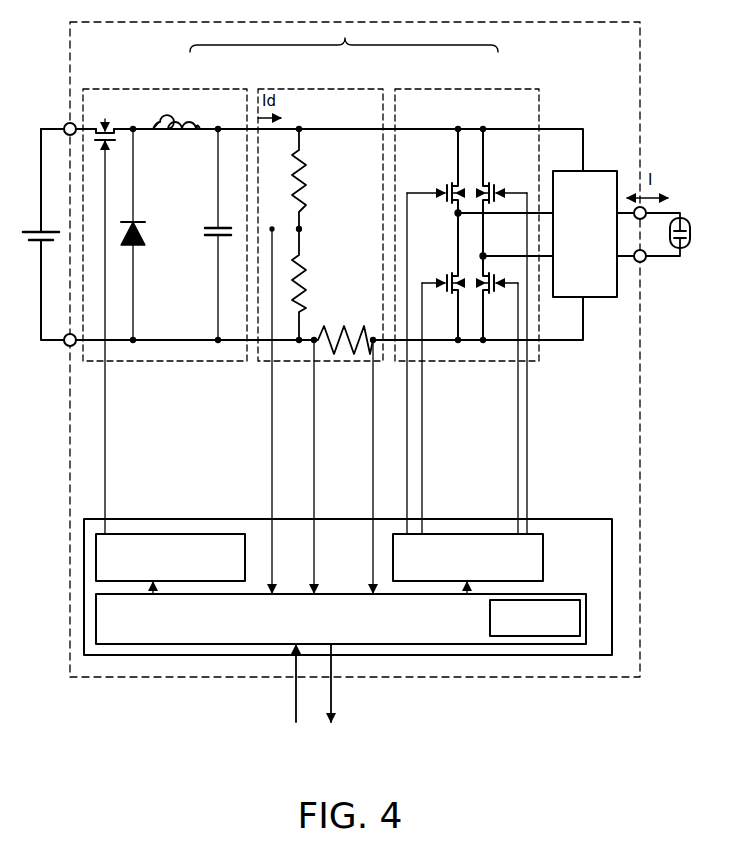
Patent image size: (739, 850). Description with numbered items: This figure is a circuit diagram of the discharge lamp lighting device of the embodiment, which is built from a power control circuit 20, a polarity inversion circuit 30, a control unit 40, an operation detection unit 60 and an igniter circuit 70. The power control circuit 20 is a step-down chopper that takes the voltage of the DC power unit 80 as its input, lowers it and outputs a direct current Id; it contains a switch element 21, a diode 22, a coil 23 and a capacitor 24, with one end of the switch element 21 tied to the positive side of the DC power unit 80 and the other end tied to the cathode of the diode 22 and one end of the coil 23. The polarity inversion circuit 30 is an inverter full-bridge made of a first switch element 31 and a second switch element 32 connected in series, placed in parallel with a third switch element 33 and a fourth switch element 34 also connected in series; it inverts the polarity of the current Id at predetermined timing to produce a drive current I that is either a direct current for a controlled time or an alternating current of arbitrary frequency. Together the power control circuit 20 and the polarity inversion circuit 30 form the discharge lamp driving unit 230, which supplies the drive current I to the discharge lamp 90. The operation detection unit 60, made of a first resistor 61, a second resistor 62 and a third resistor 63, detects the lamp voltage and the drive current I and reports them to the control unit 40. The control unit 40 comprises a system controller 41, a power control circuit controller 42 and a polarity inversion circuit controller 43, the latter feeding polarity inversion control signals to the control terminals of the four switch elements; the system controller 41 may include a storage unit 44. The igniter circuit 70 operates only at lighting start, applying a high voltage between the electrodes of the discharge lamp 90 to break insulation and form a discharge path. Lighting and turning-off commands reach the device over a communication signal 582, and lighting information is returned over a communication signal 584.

The discharge lamp driving unit 230 is at (344, 38).
The power control circuit 20 is at (197, 89).
The polarity inversion circuit 30 is at (478, 89).
The operation detection unit 60 is at (333, 357).
The switch element 21 is at (105, 317).
The diode 22 is at (141, 235).
The coil 23 is at (185, 114).
The capacitor 24 is at (224, 235).
The first switch element 31 is at (434, 331).
The second switch element 32 is at (441, 373).
The third switch element 33 is at (504, 331).
The fourth switch element 34 is at (500, 395).
The first resistor 61 is at (316, 178).
The second resistor 62 is at (316, 285).
The third resistor 63 is at (344, 327).
The igniter circuit 70 is at (603, 171).
The DC power unit 80 is at (35, 227).
The discharge lamp 90 is at (684, 214).
The control unit 40 is at (436, 519).
The system controller 41 is at (566, 594).
The power control circuit controller 42 is at (193, 534).
The polarity inversion circuit controller 43 is at (538, 534).
The storage unit 44 is at (576, 606).
The communication signal 582 is at (296, 698).
The communication signal 584 is at (331, 698).